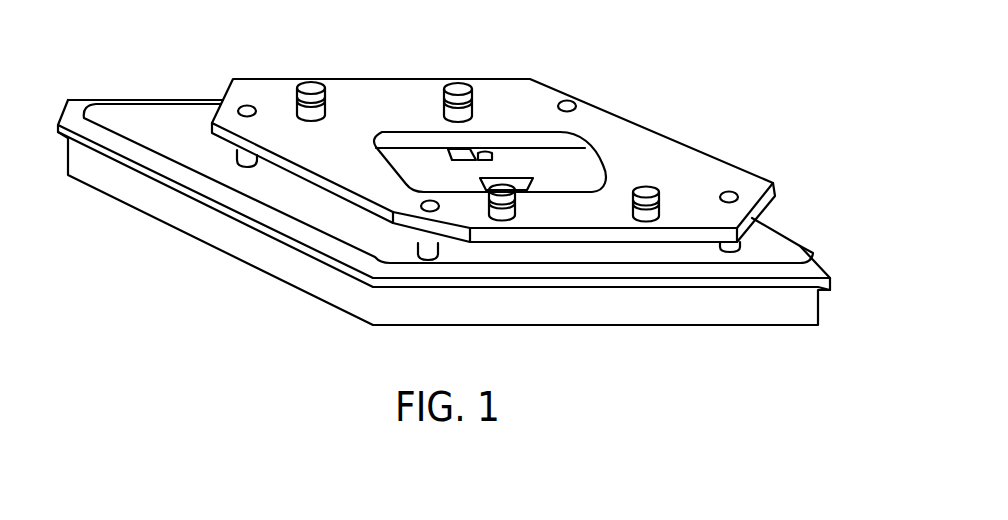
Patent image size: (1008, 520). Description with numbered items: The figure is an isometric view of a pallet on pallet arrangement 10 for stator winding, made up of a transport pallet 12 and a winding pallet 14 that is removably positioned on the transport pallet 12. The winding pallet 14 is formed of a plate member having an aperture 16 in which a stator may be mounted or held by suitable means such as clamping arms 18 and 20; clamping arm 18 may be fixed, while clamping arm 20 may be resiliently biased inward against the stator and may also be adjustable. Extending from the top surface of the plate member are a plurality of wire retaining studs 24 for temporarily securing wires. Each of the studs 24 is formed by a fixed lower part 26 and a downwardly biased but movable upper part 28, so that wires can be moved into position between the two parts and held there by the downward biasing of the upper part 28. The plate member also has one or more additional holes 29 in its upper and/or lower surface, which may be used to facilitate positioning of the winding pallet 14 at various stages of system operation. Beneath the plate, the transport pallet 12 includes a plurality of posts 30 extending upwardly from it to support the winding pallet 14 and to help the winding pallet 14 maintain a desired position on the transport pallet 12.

The pallet arrangement 10 is at (444, 162).
The transport pallet 12 is at (183, 217).
The winding pallet 14 is at (243, 79).
The aperture 16 is at (590, 160).
The clamping arm 18 is at (493, 148).
The clamping arm 20 is at (510, 178).
The wire retaining studs 24 is at (471, 111).
The lower part 26 is at (327, 100).
The upper part 28 is at (310, 82).
The holes 29 is at (252, 107).
The posts 30 is at (237, 157).